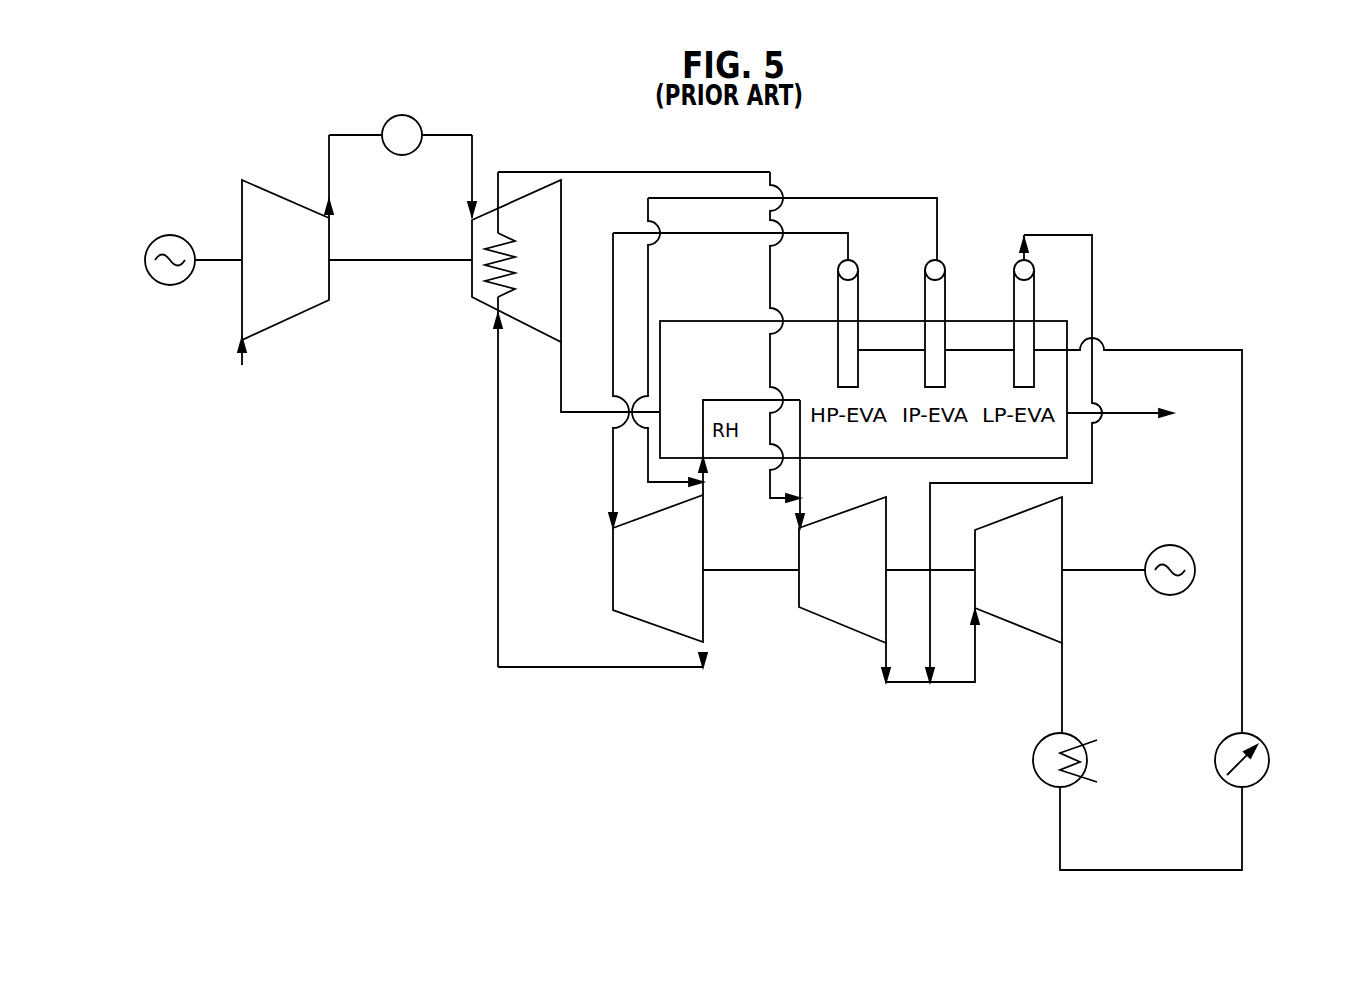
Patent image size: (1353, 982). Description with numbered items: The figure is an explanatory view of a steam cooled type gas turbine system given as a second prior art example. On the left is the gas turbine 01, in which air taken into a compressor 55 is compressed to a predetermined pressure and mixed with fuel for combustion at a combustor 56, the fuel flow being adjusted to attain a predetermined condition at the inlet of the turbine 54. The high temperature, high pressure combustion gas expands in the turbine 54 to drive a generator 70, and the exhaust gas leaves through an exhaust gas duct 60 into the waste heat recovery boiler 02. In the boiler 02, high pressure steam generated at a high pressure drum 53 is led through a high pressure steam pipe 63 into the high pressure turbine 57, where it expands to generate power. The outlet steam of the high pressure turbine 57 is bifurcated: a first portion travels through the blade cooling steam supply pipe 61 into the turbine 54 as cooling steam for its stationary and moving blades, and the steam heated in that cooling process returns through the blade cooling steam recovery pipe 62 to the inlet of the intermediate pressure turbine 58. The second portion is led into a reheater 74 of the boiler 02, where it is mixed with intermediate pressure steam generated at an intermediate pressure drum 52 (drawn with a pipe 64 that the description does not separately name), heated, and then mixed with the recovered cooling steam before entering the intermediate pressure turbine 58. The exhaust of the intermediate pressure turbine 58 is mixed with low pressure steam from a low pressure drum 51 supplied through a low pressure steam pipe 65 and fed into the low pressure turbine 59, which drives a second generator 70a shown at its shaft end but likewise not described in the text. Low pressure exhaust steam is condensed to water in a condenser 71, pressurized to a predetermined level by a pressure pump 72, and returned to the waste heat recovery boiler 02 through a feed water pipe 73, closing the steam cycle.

The gas turbine 01 is at (365, 305).
The waste heat recovery boiler 02 is at (963, 340).
The low pressure drum 51 is at (1033, 268).
The intermediate pressure drum 52 is at (940, 258).
The high pressure drum 53 is at (858, 268).
The turbine 54 is at (476, 299).
The compressor 55 is at (270, 190).
The combustor 56 is at (400, 157).
The high pressure turbine 57 is at (703, 605).
The intermediate pressure turbine 58 is at (845, 627).
The low pressure turbine 59 is at (1033, 632).
The exhaust gas duct 60 is at (558, 383).
The blade cooling steam supply pipe 61 is at (497, 523).
The blade cooling steam recovery pipe 62 is at (630, 172).
The high pressure steam pipe 63 is at (612, 485).
The intermediate pressure steam line 64 is at (815, 197).
The low pressure steam pipe 65 is at (1093, 323).
The generator 70 is at (168, 287).
The generator 70a is at (1162, 596).
The condenser 71 is at (1090, 758).
The pressure pump 72 is at (1268, 768).
The feed water pipe 73 is at (1242, 575).
The reheater 74 is at (802, 442).